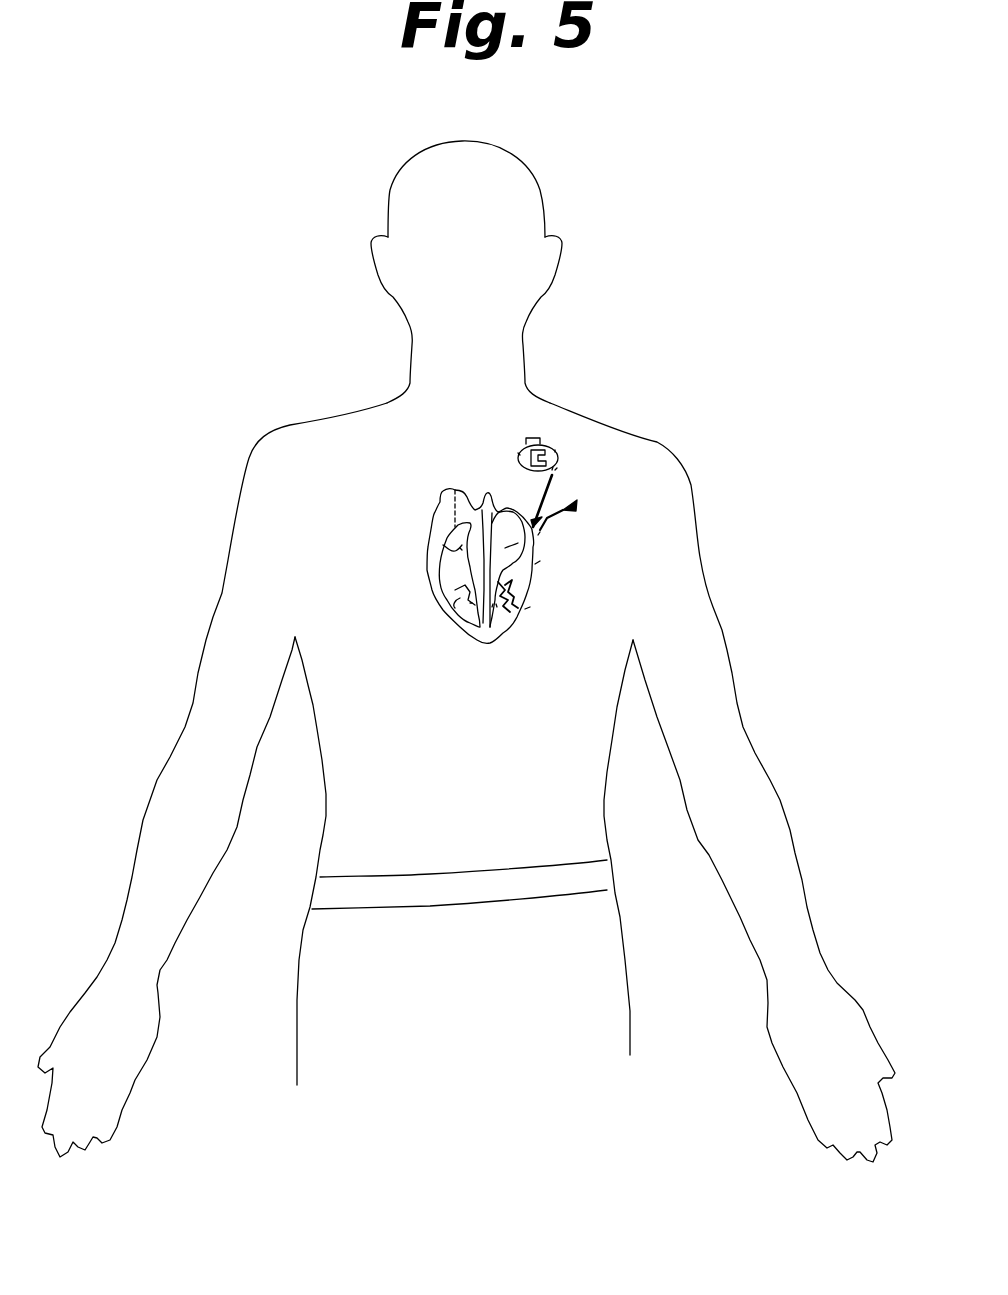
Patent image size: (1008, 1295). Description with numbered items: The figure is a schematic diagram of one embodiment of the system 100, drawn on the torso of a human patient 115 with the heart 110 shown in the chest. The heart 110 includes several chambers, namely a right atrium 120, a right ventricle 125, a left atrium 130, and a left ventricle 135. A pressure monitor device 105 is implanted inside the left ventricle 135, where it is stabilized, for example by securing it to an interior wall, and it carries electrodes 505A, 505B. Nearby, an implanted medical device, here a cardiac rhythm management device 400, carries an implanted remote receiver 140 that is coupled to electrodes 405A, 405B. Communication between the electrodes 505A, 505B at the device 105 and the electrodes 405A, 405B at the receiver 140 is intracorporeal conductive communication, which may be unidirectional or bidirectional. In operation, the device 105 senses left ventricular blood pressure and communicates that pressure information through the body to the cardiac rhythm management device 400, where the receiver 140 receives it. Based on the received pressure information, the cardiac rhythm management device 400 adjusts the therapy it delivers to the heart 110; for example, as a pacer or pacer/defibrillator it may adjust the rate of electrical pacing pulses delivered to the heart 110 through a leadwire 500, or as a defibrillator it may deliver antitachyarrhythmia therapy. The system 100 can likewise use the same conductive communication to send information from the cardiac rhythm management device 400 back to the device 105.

The system 100 is at (572, 508).
The device 105 is at (530, 607).
The heart 110 is at (463, 622).
The human patient 115 is at (280, 430).
The right atrium 120 is at (460, 548).
The right ventricle 125 is at (470, 603).
The left atrium 130 is at (540, 532).
The left ventricle 135 is at (540, 561).
The receiver 140 is at (555, 450).
The cardiac rhythm management device 400 is at (553, 467).
The electrode 405A is at (518, 453).
The electrode 405B is at (557, 468).
The leadwire 500 is at (518, 465).
The electrode 505A is at (492, 607).
The electrode 505B is at (497, 607).